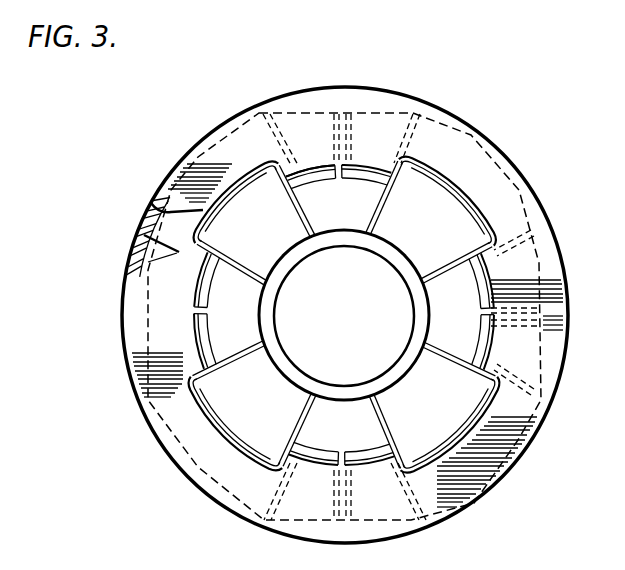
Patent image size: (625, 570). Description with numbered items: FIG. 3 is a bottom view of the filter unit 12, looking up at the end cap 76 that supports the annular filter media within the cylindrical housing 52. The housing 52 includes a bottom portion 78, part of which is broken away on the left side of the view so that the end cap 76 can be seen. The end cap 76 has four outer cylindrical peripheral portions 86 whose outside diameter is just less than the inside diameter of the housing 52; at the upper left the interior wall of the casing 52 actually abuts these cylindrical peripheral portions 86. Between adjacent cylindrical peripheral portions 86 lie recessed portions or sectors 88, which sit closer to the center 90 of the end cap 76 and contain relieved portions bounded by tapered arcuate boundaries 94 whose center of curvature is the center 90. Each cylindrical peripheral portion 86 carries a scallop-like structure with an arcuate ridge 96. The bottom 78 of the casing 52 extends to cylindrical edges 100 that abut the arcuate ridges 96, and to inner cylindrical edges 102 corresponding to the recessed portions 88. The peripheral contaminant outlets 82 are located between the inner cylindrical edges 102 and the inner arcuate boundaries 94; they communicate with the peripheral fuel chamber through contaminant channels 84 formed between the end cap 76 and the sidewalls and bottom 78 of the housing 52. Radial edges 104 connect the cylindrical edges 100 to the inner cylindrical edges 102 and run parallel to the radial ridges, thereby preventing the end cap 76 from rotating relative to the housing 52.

The filter unit 12 is at (207, 101).
The cylindrical housing 52 is at (469, 124).
The end cap 76 is at (198, 150).
The bottom portion 78 is at (151, 203).
The peripheral contaminant outlets 82 is at (299, 164).
The contaminant channels 84 is at (129, 262).
The cylindrical peripheral portions 86 is at (243, 122).
The recessed portions or sectors 88 is at (352, 111).
The center 90 is at (343, 318).
The tapered arcuate boundaries 94 is at (318, 163).
The arcuate ridge 96 is at (466, 214).
The cylindrical edges 100 is at (229, 180).
The inner cylindrical edges 102 is at (373, 172).
The radial edges 104 is at (394, 161).